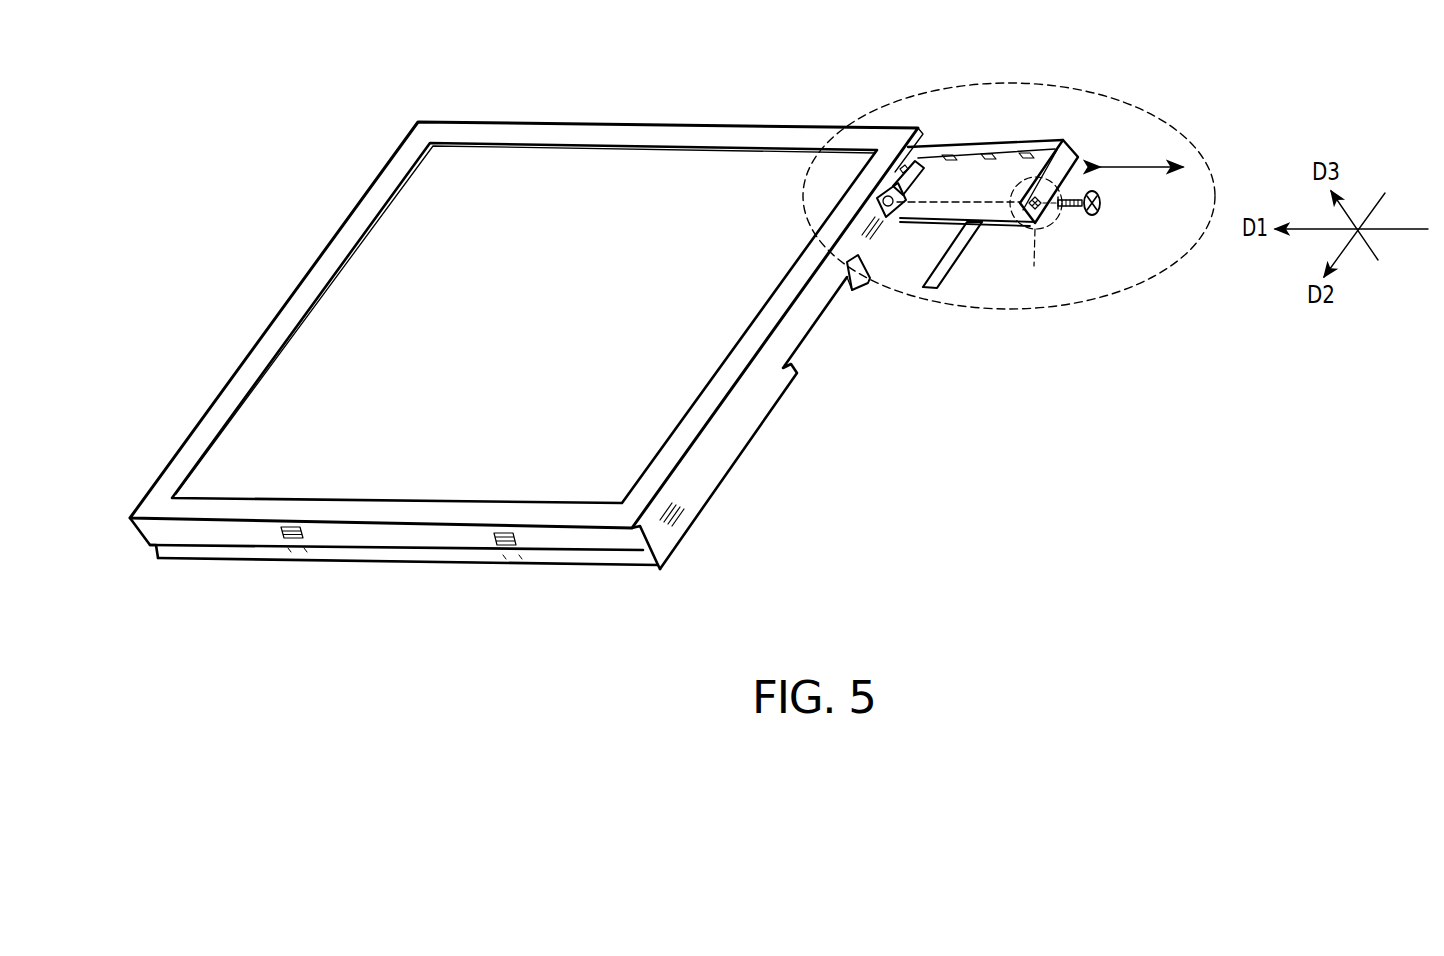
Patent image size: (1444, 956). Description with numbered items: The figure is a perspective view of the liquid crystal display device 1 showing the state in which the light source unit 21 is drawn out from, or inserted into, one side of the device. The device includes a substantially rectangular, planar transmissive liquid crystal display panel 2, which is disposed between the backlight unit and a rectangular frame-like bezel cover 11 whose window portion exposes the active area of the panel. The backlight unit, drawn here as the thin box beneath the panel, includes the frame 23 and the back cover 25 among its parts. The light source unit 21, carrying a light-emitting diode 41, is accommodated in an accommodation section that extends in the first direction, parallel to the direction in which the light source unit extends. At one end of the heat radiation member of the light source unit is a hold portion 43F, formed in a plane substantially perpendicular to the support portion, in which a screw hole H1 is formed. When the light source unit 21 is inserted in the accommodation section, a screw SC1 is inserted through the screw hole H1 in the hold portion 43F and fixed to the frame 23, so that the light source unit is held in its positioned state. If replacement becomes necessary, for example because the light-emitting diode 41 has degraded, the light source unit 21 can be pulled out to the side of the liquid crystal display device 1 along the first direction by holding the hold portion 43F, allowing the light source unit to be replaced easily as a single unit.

The liquid crystal display device 1 is at (183, 333).
The liquid crystal display panel 2 is at (383, 243).
The bezel cover 11 is at (484, 130).
The light source unit 21 is at (1083, 131).
The frame 23 is at (890, 206).
The back cover 25 is at (655, 572).
The light-emitting diode 41 is at (987, 155).
The hold portion 43F is at (1063, 158).
The screw hole H1 is at (1040, 208).
The screw SC1 is at (1101, 211).